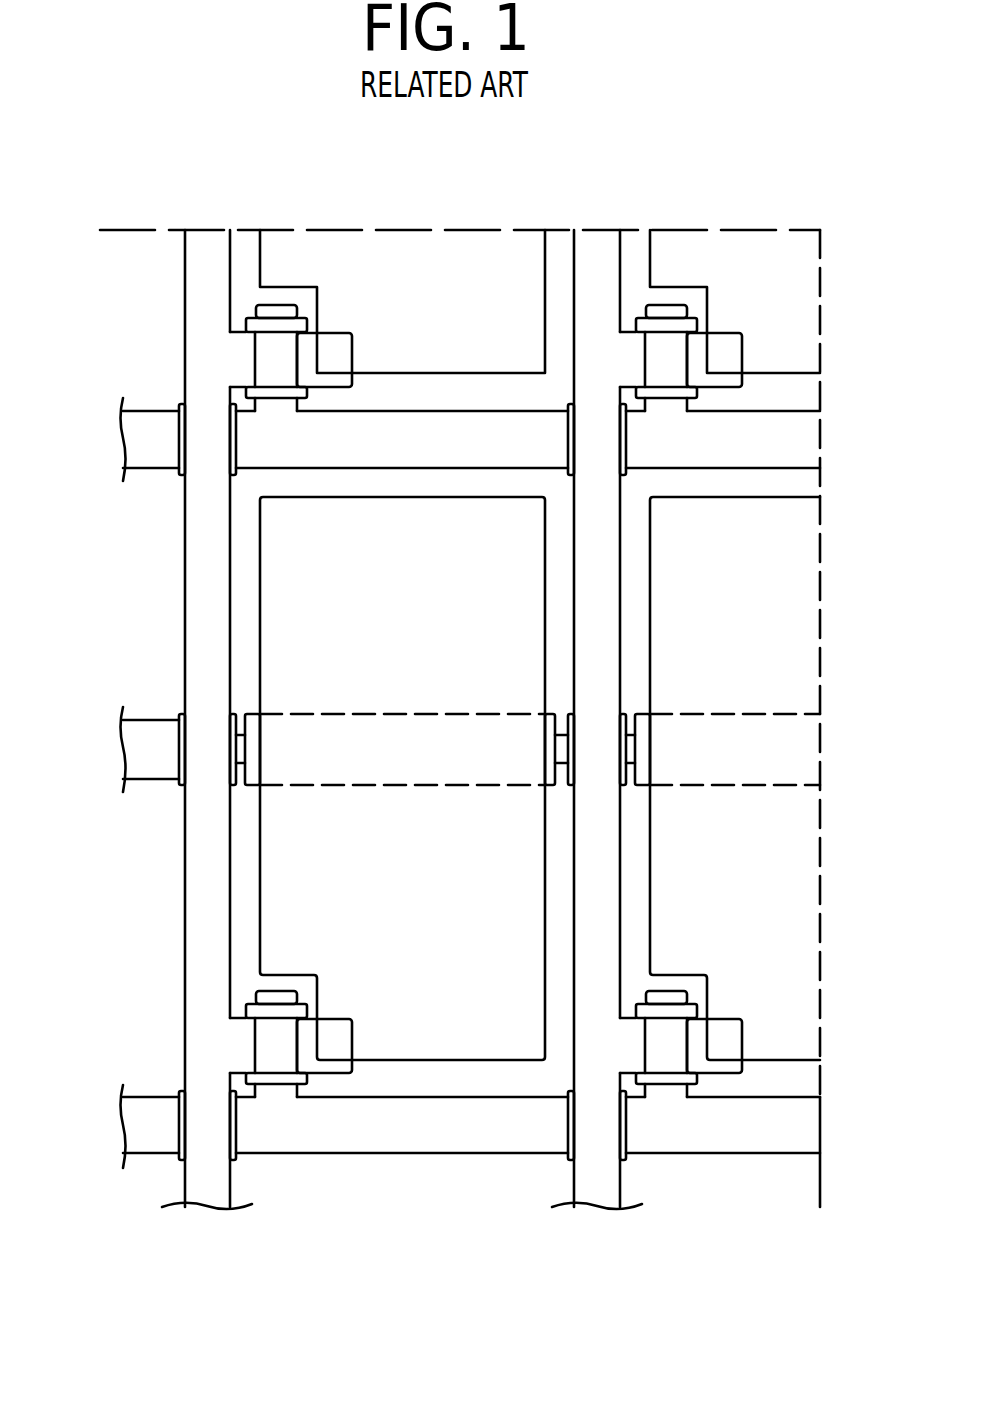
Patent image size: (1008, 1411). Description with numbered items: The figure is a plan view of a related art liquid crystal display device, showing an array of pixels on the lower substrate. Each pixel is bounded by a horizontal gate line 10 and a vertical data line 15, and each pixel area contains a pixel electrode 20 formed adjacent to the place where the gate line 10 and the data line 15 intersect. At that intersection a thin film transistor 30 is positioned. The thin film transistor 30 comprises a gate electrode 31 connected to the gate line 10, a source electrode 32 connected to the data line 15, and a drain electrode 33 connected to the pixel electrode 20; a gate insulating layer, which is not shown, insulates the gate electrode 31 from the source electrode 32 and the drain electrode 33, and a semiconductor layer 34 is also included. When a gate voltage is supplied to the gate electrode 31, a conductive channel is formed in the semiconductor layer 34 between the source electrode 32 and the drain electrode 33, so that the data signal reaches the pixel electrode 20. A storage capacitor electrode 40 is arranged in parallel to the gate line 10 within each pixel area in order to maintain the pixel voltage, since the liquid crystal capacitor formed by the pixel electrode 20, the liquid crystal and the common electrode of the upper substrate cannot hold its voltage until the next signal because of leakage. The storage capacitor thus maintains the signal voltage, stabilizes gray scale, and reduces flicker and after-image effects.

The gate line 10 is at (450, 1125).
The data line 15 is at (198, 947).
The pixel electrode 20 is at (297, 858).
The thin film transistor 30 is at (277, 1046).
The gate electrode 31 is at (267, 1090).
The source electrode 32 is at (243, 1057).
The drain electrode 33 is at (305, 1062).
The semiconductor layer 34 is at (257, 1015).
The storage capacitor electrode 40 is at (297, 730).